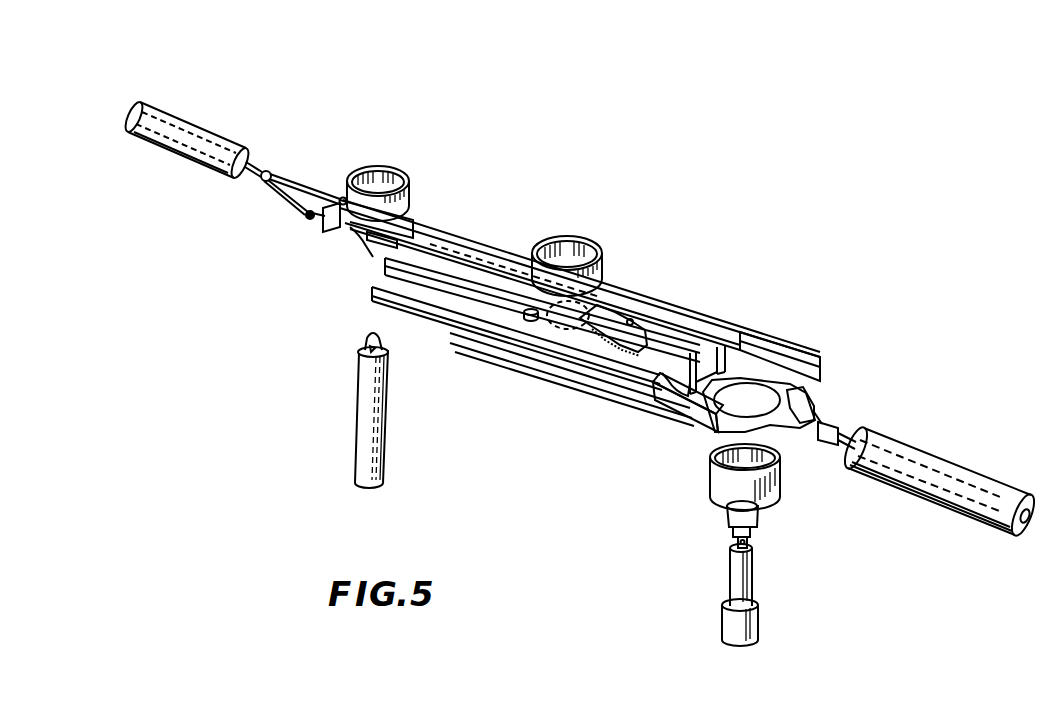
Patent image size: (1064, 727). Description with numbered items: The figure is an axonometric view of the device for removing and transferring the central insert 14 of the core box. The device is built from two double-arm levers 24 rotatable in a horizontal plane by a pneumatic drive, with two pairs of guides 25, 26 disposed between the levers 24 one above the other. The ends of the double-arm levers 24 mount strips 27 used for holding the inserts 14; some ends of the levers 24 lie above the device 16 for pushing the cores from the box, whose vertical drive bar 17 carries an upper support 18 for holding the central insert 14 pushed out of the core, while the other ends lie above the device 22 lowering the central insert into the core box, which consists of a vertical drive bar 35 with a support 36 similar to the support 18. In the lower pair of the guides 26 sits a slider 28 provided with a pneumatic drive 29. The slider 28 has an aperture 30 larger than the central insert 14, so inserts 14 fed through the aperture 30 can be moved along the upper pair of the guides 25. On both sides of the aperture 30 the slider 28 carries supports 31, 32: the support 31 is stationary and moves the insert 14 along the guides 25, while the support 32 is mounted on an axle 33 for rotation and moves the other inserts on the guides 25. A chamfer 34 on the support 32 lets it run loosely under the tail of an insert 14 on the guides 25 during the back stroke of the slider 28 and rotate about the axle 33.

The central insert 14 is at (351, 171).
The device for pushing the cores from the box 16 is at (744, 595).
The vertical drive bar 17 is at (733, 622).
The upper support 18 is at (751, 533).
The device lowering the central insert into the core box 22 is at (376, 407).
The double-arm lever 24 is at (465, 283).
The upper pair of guides 25 is at (692, 352).
The lower pair of guides 26 is at (433, 315).
The strip 27 is at (348, 239).
The slider 28 is at (747, 425).
The pneumatic drive 29 is at (945, 462).
The aperture 30 is at (752, 393).
The stationary support 31 is at (813, 400).
The rotatable support 32 is at (609, 308).
The axle 33 is at (631, 318).
The chamfer 34 is at (669, 357).
The vertical drive bar 35 is at (363, 436).
The support 36 is at (367, 339).